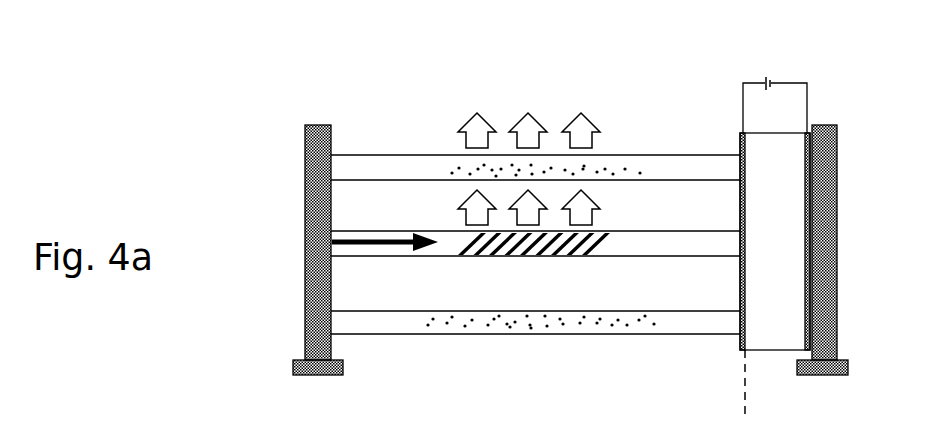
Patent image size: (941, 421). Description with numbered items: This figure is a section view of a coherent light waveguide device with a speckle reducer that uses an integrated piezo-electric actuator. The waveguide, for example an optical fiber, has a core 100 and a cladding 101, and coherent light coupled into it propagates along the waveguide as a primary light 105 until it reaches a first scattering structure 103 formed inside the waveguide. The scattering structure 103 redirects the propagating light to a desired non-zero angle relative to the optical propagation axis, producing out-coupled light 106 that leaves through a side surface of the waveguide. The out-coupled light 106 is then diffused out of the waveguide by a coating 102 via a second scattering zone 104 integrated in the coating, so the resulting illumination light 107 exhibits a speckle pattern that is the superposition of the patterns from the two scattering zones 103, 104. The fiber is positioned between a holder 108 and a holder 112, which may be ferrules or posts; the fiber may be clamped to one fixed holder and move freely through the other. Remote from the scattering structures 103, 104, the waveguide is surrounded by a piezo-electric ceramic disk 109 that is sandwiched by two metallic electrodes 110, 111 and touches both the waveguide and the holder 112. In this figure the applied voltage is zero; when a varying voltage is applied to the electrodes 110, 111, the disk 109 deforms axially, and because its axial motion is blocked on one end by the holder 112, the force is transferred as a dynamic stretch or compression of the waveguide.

The core 100 is at (347, 250).
The cladding 101 is at (347, 280).
The coating 102 is at (342, 172).
The first scattering structure 103 is at (468, 252).
The second scattering zone 104 is at (625, 163).
The primary light 105 is at (345, 241).
The out-coupled light 106 is at (477, 210).
The illumination light 107 is at (590, 122).
The holder 108 is at (318, 349).
The piezo-electric ceramic disk 109 is at (775, 272).
The metallic electrode 110 is at (743, 315).
The metallic electrode 111 is at (810, 340).
The holder 112 is at (818, 372).